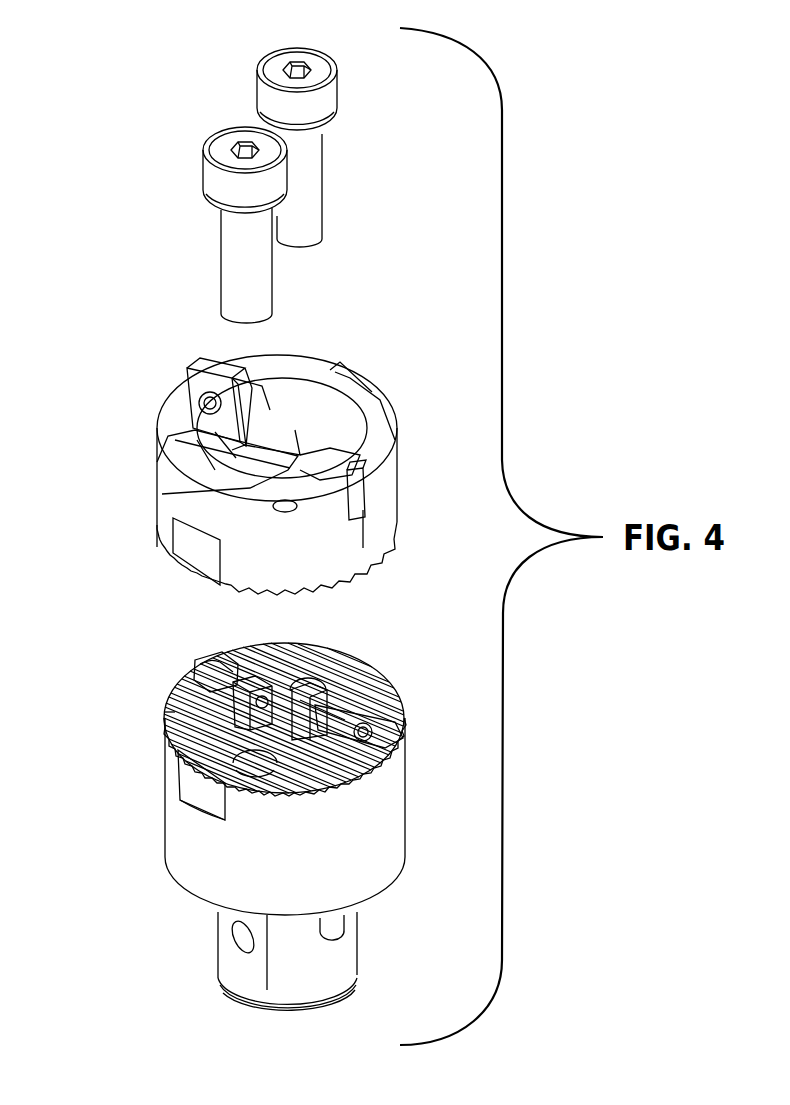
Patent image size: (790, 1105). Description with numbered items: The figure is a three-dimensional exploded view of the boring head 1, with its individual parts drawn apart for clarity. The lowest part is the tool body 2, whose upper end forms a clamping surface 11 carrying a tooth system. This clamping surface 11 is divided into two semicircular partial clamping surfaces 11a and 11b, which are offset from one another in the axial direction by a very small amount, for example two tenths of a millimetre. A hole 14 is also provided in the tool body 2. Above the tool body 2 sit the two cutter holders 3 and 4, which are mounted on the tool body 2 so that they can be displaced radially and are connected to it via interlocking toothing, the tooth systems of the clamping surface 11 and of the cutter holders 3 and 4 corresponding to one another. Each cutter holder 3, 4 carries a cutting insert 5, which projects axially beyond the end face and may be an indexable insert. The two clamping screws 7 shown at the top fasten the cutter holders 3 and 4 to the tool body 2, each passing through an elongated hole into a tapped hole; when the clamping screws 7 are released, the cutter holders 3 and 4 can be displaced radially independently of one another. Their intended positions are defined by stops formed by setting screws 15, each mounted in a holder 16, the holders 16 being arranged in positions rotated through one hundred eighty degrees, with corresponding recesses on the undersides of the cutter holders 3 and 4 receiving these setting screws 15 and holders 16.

The boring head 1 is at (120, 392).
The tool body 2 is at (165, 830).
The cutter holder 3 is at (377, 393).
The cutter holder 4 is at (157, 500).
The cutting insert 5 is at (193, 380).
The clamping screw 7 is at (265, 100).
The clamping surface 11 is at (245, 648).
The partial clamping surface 11a is at (337, 720).
The partial clamping surface 11b is at (165, 722).
The hole 14 is at (308, 688).
The setting screw 15 is at (200, 668).
The holder 16 is at (250, 703).